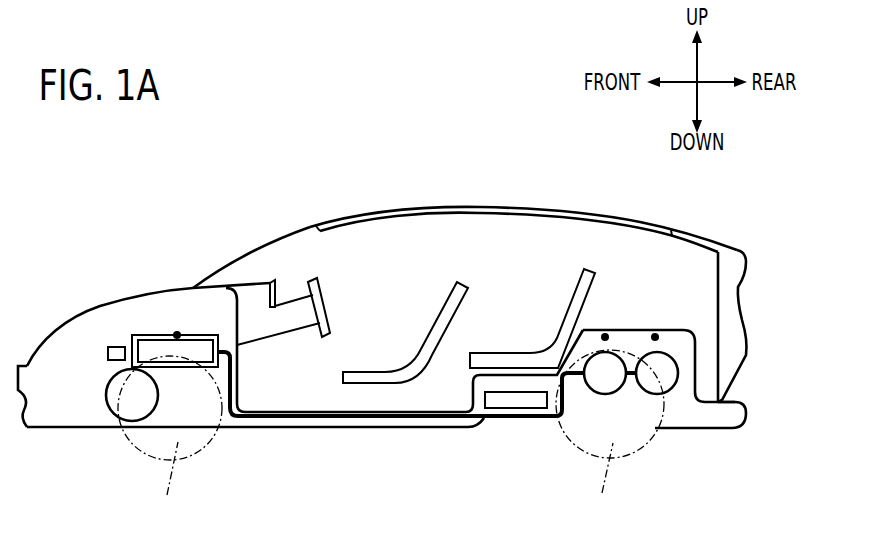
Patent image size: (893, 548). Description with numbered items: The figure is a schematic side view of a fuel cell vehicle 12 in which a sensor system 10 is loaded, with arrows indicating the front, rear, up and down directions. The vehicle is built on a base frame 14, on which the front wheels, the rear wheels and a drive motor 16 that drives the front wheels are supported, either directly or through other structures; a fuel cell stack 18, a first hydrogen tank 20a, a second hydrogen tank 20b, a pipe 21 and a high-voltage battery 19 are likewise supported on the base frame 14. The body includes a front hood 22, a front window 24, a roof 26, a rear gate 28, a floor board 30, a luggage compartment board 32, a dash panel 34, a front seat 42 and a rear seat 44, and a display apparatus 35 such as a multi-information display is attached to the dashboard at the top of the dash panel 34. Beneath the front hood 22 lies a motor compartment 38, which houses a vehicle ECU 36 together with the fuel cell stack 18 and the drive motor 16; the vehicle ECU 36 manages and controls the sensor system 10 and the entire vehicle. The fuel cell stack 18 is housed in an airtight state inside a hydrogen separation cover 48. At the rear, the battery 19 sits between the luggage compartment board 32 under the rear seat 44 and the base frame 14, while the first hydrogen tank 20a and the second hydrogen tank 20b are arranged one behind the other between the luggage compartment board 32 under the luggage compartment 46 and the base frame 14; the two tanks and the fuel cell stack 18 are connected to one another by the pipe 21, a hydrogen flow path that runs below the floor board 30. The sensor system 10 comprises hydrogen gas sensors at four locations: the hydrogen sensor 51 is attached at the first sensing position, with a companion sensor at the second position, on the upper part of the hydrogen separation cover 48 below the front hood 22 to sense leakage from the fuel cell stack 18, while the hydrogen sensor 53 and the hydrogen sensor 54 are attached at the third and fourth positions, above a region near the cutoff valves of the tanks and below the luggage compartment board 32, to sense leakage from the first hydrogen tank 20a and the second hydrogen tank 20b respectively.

The sensor system 10 is at (330, 135).
The fuel cell vehicle 12 is at (582, 206).
The base frame 14 is at (308, 430).
The drive motor 16 is at (110, 405).
The fuel cell stack 18 is at (185, 336).
The battery 19 is at (515, 398).
The first hydrogen tank 20a is at (597, 394).
The second hydrogen tank 20b is at (664, 378).
The pipe 21 is at (267, 420).
The front hood 22 is at (88, 311).
The front window 24 is at (239, 260).
The roof 26 is at (440, 208).
The rear gate 28 is at (700, 233).
The floor board 30 is at (392, 398).
The luggage compartment board 32 is at (640, 330).
The dash panel 34 is at (238, 377).
The display apparatus 35 is at (280, 288).
The vehicle ECU 36 is at (108, 352).
The motor compartment 38 is at (117, 323).
The front seat 42 is at (438, 324).
The rear seat 44 is at (575, 286).
The luggage compartment 46 is at (705, 297).
The hydrogen separation cover 48 is at (147, 335).
The hydrogen sensor 51 is at (177, 335).
The hydrogen sensor 53 is at (605, 333).
The hydrogen sensor 54 is at (655, 341).